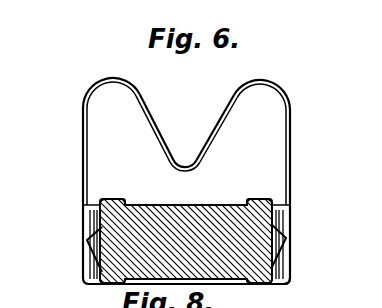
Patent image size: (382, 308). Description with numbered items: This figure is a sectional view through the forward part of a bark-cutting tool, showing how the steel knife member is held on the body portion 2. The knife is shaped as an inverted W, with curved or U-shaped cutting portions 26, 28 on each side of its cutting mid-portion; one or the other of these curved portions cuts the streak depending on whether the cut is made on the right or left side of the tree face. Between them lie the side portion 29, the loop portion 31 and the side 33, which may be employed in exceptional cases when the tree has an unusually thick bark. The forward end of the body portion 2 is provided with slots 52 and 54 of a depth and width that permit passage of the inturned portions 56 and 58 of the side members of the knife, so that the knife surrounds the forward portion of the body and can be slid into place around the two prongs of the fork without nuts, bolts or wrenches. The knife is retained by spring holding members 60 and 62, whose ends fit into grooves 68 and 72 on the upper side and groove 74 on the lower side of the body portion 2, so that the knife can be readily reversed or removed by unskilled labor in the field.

The body portion 2 is at (190, 204).
The curved cutting portion 26 is at (268, 80).
The curved cutting portion 28 is at (112, 78).
The side portion 29 is at (152, 118).
The loop portion 31 is at (185, 168).
The side 33 is at (227, 108).
The slot 52 is at (283, 267).
The slot 54 is at (93, 269).
The inturned portion 56 is at (287, 282).
The inturned portion 58 is at (124, 284).
The spring holding member 60 is at (287, 251).
The spring holding member 62 is at (88, 252).
The groove 68 is at (122, 203).
The groove 72 is at (247, 203).
The groove 74 is at (247, 284).